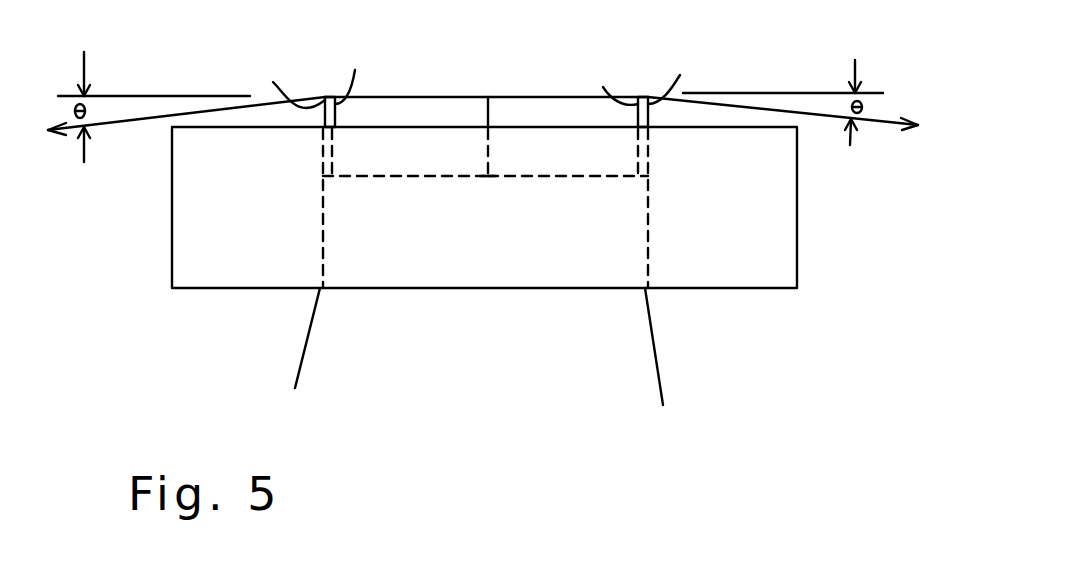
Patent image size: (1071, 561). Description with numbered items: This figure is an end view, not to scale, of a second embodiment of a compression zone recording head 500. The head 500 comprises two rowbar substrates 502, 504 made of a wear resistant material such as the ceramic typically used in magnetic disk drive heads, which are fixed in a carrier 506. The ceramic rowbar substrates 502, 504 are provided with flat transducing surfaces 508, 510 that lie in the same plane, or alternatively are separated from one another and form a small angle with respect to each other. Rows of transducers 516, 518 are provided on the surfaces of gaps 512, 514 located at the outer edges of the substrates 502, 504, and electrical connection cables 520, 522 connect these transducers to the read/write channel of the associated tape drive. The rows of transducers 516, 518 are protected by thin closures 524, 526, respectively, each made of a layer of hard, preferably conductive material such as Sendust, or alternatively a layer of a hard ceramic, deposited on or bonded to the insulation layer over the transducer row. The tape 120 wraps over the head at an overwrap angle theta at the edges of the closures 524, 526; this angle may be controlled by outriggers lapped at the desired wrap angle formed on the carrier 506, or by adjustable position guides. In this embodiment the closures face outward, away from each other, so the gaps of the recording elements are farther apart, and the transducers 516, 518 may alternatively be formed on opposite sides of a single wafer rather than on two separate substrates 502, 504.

The compression zone recording head 500 is at (810, 356).
The rowbar substrate 502 is at (410, 180).
The rowbar substrate 504 is at (556, 180).
The carrier 506 is at (797, 237).
The transducing surface 508 is at (415, 95).
The transducing surface 510 is at (530, 93).
The gap 512 is at (325, 94).
The gap 514 is at (645, 92).
The row of transducers 516 is at (366, 70).
The row of transducers 518 is at (607, 78).
The electrical connection cable 520 is at (303, 345).
The electrical connection cable 522 is at (662, 362).
The closure 524 is at (267, 85).
The closure 526 is at (686, 74).
The tape 120 is at (870, 127).